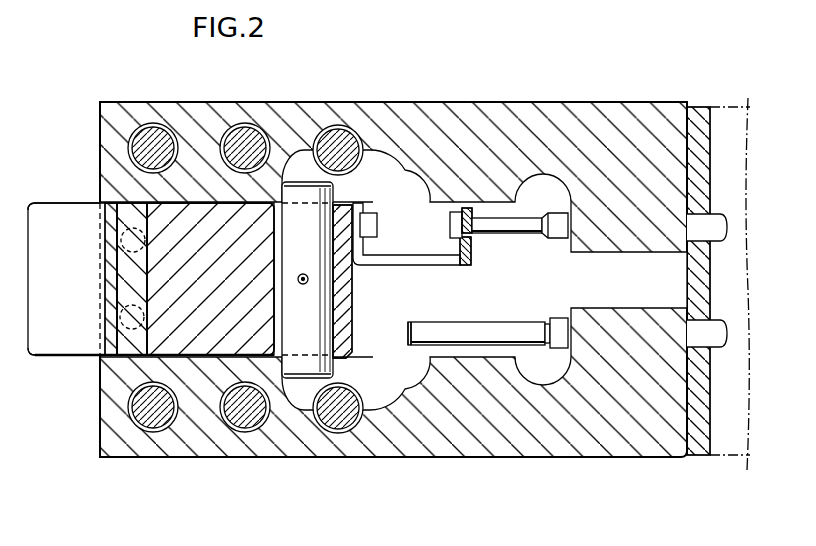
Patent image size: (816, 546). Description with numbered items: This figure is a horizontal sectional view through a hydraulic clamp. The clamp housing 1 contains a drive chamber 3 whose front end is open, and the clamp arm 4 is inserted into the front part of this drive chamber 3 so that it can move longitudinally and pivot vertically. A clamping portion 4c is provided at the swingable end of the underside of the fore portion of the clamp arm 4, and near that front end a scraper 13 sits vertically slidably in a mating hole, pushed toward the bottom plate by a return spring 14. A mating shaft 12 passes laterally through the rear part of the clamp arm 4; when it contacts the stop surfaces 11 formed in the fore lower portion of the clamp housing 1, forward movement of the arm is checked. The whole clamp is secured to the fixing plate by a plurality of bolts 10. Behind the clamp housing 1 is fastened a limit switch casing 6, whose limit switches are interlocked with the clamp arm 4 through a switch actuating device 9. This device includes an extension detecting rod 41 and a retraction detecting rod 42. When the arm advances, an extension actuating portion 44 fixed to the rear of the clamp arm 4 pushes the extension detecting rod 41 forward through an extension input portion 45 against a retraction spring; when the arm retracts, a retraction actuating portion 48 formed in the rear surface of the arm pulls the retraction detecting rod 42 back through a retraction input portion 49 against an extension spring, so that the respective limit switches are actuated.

The clamp housing 1 is at (464, 100).
The drive chamber 3 is at (192, 213).
The clamp arm 4 is at (50, 200).
The clamping portion 4c is at (75, 210).
The limit switch casing 6 is at (718, 105).
The switch actuating device 9 is at (541, 200).
The bolts 10 is at (149, 136).
The stop surfaces 11 is at (283, 190).
The mating shaft 12 is at (321, 287).
The scraper 13 is at (111, 357).
The return spring 14 is at (127, 323).
The extension detecting rod 41 is at (528, 240).
The retraction detecting rod 42 is at (506, 318).
The extension actuating portion 44 is at (471, 250).
The extension input portion 45 is at (450, 224).
The retraction actuating portion 48 is at (350, 324).
The retraction input portion 49 is at (409, 322).